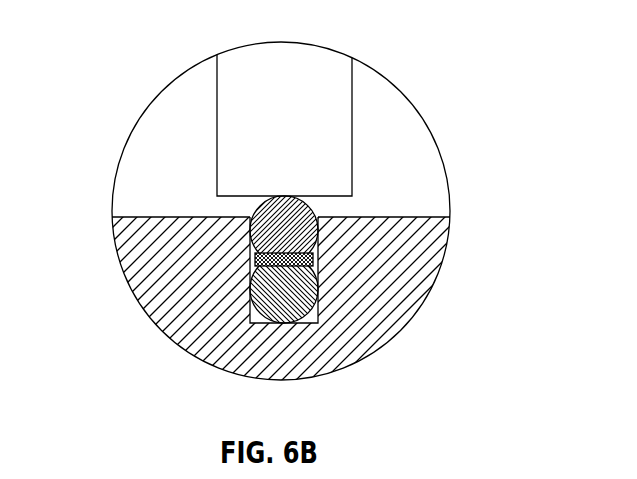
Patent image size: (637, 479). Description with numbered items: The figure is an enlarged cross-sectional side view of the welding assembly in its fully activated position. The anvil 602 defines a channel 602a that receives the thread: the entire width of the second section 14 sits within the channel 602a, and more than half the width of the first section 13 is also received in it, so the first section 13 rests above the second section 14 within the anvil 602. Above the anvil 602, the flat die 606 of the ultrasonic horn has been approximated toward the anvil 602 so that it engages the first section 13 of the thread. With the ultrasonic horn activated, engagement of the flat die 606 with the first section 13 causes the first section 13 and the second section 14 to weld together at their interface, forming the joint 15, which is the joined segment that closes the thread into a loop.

The first section 13 is at (245, 325).
The second section 14 is at (265, 222).
The joint 15 is at (256, 260).
The anvil 602 is at (363, 325).
The channel 602a is at (358, 218).
The flat die 606 is at (306, 148).